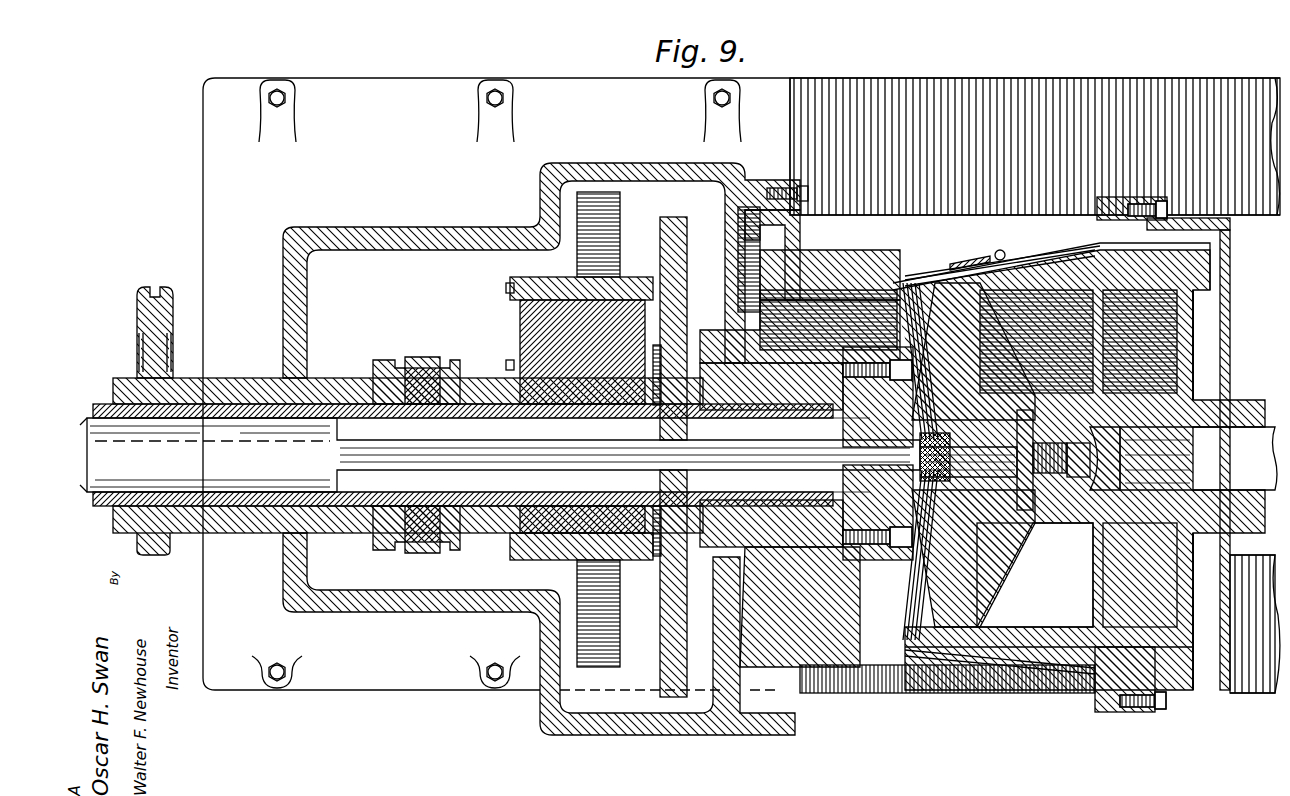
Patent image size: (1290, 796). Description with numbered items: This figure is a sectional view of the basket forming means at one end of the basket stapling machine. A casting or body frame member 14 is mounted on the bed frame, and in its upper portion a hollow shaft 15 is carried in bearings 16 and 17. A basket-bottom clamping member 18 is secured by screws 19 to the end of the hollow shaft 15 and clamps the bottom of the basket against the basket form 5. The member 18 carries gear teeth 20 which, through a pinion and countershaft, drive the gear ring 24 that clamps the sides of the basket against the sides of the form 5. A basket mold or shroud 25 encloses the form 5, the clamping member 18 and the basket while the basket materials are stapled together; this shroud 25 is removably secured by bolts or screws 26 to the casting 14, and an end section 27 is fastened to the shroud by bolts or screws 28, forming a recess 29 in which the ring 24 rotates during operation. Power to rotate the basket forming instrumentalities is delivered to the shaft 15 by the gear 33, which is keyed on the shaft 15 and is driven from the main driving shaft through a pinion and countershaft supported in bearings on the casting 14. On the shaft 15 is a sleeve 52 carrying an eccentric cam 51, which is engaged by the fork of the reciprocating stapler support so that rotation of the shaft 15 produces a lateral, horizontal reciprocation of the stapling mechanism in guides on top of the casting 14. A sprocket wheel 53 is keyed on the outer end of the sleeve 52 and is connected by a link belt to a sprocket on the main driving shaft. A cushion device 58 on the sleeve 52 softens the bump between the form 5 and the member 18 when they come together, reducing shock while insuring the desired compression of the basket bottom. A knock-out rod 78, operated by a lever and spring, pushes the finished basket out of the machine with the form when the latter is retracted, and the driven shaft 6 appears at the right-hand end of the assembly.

The basket form 5 is at (1007, 382).
The driven shaft 6 is at (1098, 460).
The casting or body frame member 14 is at (643, 172).
The hollow shaft 15 is at (323, 406).
The bearing 16 is at (283, 392).
The bearing 17 is at (811, 540).
The basket-bottom clamping member 18 is at (853, 280).
The screws 19 is at (905, 288).
The gear teeth 20 is at (753, 225).
The gear ring 24 is at (1097, 222).
The basket mold or shroud 25 is at (973, 248).
The bolts or screws 26 is at (810, 190).
The end section 27 is at (1228, 232).
The bolts or screws 28 is at (1165, 200).
The recess 29 is at (1107, 708).
The gear 33 is at (681, 695).
The eccentric cam 51 is at (537, 330).
The sleeve 52 is at (503, 518).
The sprocket wheel 53 is at (170, 289).
The cushion device 58 is at (418, 362).
The knock-out rod 78 is at (500, 455).